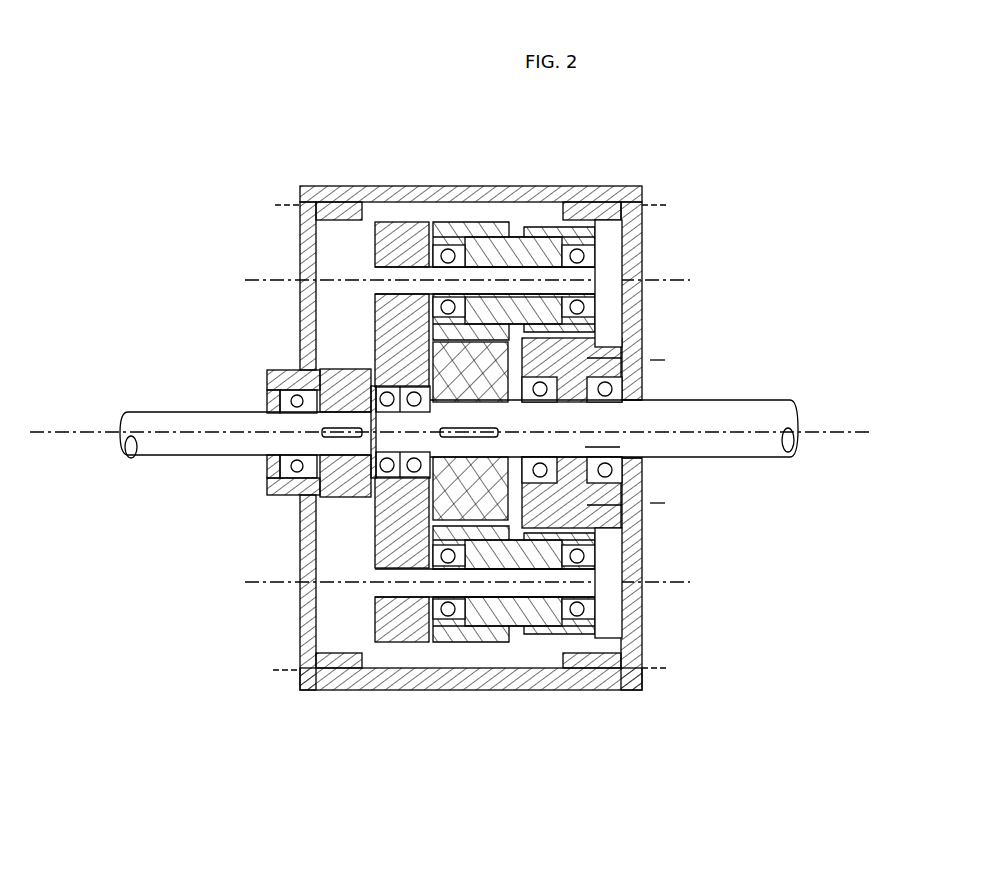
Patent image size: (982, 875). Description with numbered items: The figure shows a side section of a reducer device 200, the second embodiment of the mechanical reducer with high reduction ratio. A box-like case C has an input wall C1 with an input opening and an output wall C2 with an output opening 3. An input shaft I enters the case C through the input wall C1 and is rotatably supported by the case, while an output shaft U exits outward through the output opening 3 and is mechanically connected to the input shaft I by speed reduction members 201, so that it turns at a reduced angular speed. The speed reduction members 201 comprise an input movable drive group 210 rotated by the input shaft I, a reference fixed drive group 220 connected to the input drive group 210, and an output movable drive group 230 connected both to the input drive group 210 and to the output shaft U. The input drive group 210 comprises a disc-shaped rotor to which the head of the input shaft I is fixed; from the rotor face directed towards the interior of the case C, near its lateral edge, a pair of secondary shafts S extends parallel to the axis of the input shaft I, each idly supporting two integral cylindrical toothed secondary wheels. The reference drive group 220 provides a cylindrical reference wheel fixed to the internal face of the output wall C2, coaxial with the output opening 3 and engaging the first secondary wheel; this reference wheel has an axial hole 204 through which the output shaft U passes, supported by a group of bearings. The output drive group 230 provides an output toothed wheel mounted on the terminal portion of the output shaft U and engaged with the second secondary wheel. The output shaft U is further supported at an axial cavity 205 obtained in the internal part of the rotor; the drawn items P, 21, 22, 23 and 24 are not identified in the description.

The reducer device 200 is at (444, 148).
The box-like case C is at (520, 682).
The input wall C1 is at (300, 289).
The output wall C2 is at (633, 186).
The axial cavity 205 is at (378, 383).
The planet carrier / rotor block P is at (397, 505).
The stator 22 is at (597, 232).
The rotor 21 is at (590, 340).
The bearing 23 is at (467, 237).
The secondary shafts S is at (388, 276).
The speed reduction members 201 is at (610, 292).
The main rotor core 24 is at (493, 493).
The reference fixed drive group 220 is at (598, 365).
The output movable drive group 230 is at (597, 548).
The input movable drive group 210 is at (332, 330).
The input shaft I is at (218, 425).
The output shaft U is at (688, 422).
The output opening 3 is at (648, 398).
The axial hole 204 is at (585, 447).